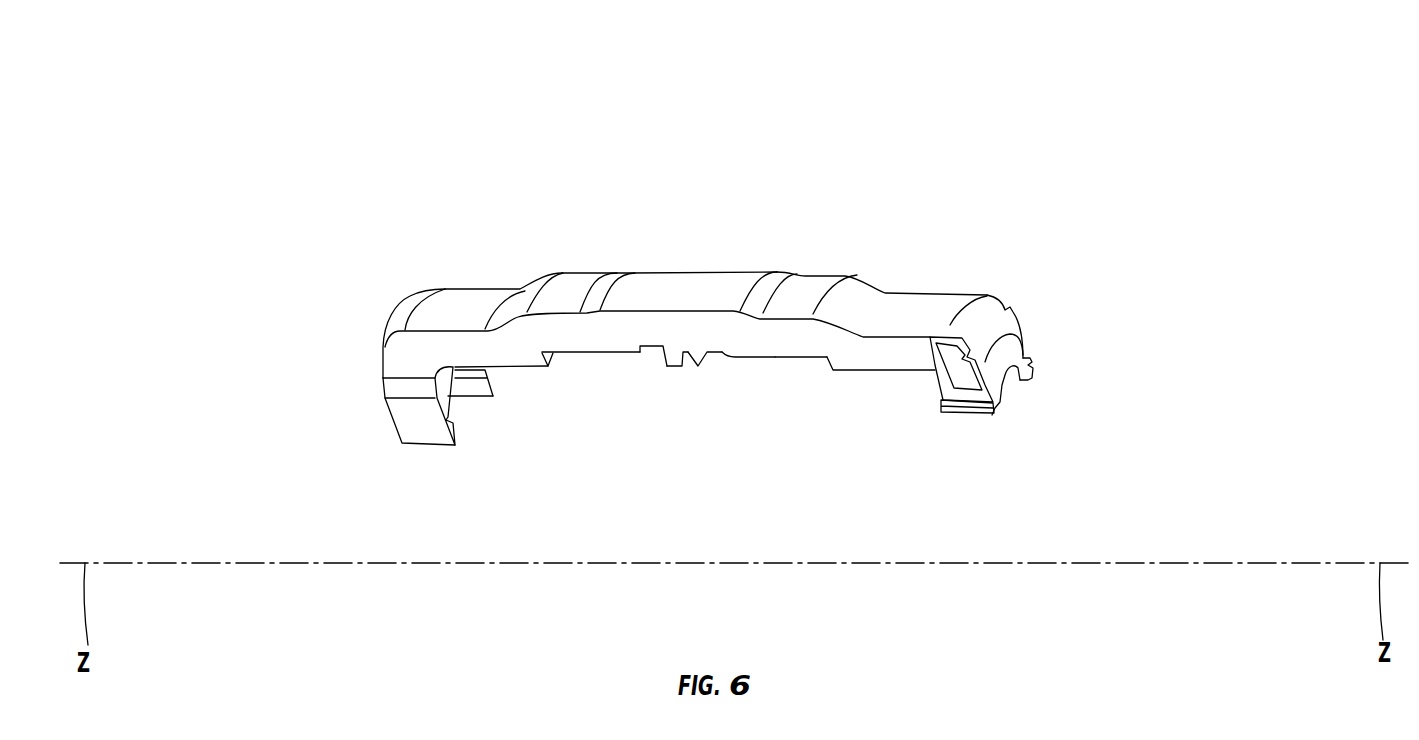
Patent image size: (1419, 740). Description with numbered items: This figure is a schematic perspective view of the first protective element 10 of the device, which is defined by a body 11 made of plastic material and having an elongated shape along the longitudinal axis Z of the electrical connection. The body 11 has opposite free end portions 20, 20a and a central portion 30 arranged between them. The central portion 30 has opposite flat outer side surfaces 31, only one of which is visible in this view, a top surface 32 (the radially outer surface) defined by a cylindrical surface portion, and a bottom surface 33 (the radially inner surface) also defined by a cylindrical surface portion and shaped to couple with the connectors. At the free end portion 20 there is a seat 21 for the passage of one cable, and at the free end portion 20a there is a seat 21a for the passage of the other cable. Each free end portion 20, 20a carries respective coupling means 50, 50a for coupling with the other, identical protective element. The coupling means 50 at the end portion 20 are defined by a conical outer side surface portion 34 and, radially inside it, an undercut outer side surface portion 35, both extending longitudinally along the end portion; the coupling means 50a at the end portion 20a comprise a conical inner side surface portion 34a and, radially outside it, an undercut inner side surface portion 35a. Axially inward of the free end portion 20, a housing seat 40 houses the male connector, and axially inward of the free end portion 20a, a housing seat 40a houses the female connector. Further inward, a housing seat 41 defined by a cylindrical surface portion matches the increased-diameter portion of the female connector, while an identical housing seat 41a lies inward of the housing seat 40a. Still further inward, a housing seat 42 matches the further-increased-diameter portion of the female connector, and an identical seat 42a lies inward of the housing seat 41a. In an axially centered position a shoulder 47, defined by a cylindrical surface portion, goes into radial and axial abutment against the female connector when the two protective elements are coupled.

The protective element 10 is at (1009, 126).
The body 11 is at (689, 268).
The free end portion 20 is at (1020, 290).
The free end portion 20a is at (393, 280).
The seat 21 is at (1016, 392).
The seat 21a is at (493, 424).
The central portion 30 is at (757, 260).
The flat outer side surface 31 is at (580, 353).
The top surface 32 is at (650, 272).
The bottom surface 33 is at (758, 358).
The conical outer side surface portion 34 is at (935, 392).
The conical inner side surface portion 34a is at (460, 436).
The undercut outer side surface portion 35 is at (963, 418).
The undercut inner side surface portion 35a is at (458, 410).
The housing seat 40 is at (880, 370).
The housing seat 40a is at (527, 368).
The further housing seat 41 is at (793, 357).
The further housing seat 41a is at (600, 368).
The housing seat 42 is at (712, 355).
The seat 42a is at (650, 352).
The shoulder 47 is at (682, 367).
The coupling means 50 is at (1081, 373).
The coupling means 50a is at (327, 408).